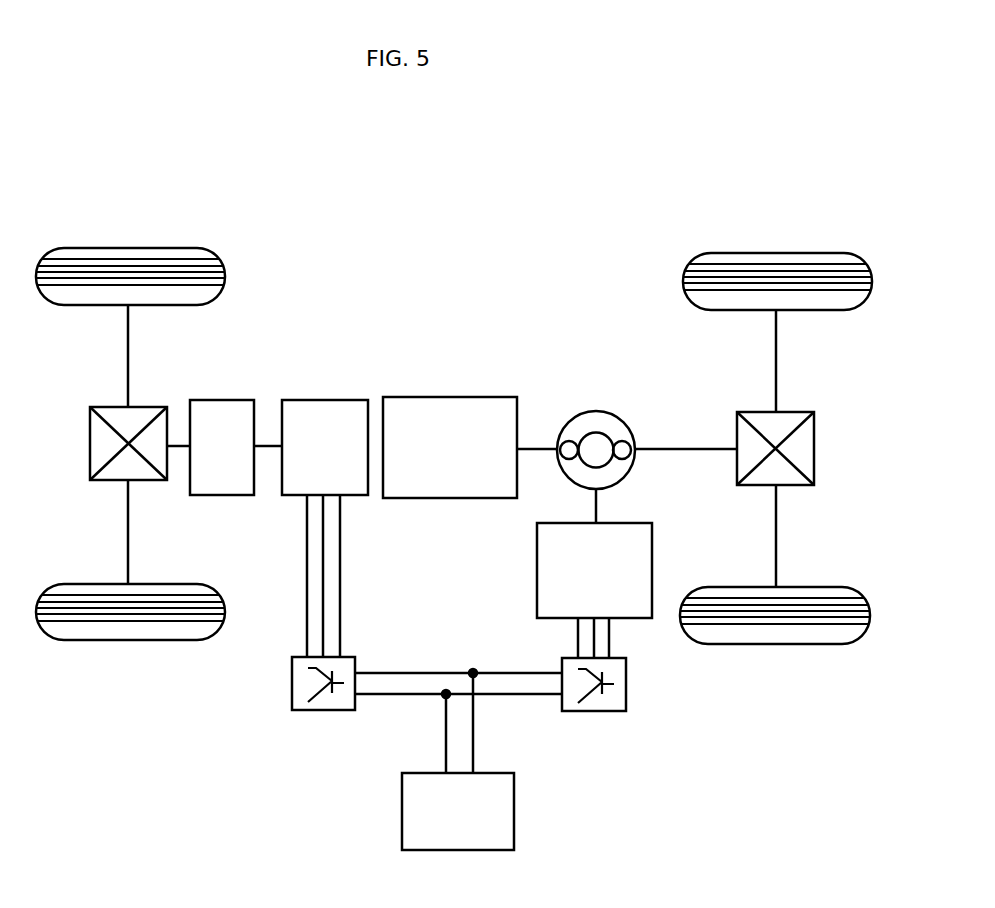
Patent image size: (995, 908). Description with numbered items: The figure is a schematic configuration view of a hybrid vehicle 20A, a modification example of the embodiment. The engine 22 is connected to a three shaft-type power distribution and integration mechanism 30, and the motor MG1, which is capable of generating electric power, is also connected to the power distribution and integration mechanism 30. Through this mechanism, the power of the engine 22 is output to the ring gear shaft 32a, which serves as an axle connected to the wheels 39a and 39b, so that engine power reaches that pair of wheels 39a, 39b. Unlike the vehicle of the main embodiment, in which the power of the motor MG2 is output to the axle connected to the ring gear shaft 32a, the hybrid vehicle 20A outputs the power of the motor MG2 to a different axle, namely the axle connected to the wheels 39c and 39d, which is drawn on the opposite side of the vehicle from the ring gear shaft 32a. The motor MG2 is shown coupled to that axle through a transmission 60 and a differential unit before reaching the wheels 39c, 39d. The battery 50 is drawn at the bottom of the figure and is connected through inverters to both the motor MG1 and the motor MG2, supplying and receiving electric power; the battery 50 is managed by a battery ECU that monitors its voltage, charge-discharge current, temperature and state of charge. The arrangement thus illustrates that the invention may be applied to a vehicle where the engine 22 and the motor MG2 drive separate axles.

The hybrid vehicle 20A is at (492, 192).
The engine 22 is at (455, 397).
The power distribution and integration mechanism 30 is at (596, 411).
The ring gear shaft 32a is at (651, 449).
The wheel 39a is at (779, 253).
The wheel 39b is at (776, 644).
The wheel 39c is at (136, 248).
The wheel 39d is at (124, 640).
The battery 50 is at (514, 810).
The transmission 60 is at (225, 400).
The motor MG1 is at (537, 572).
The motor MG2 is at (328, 400).